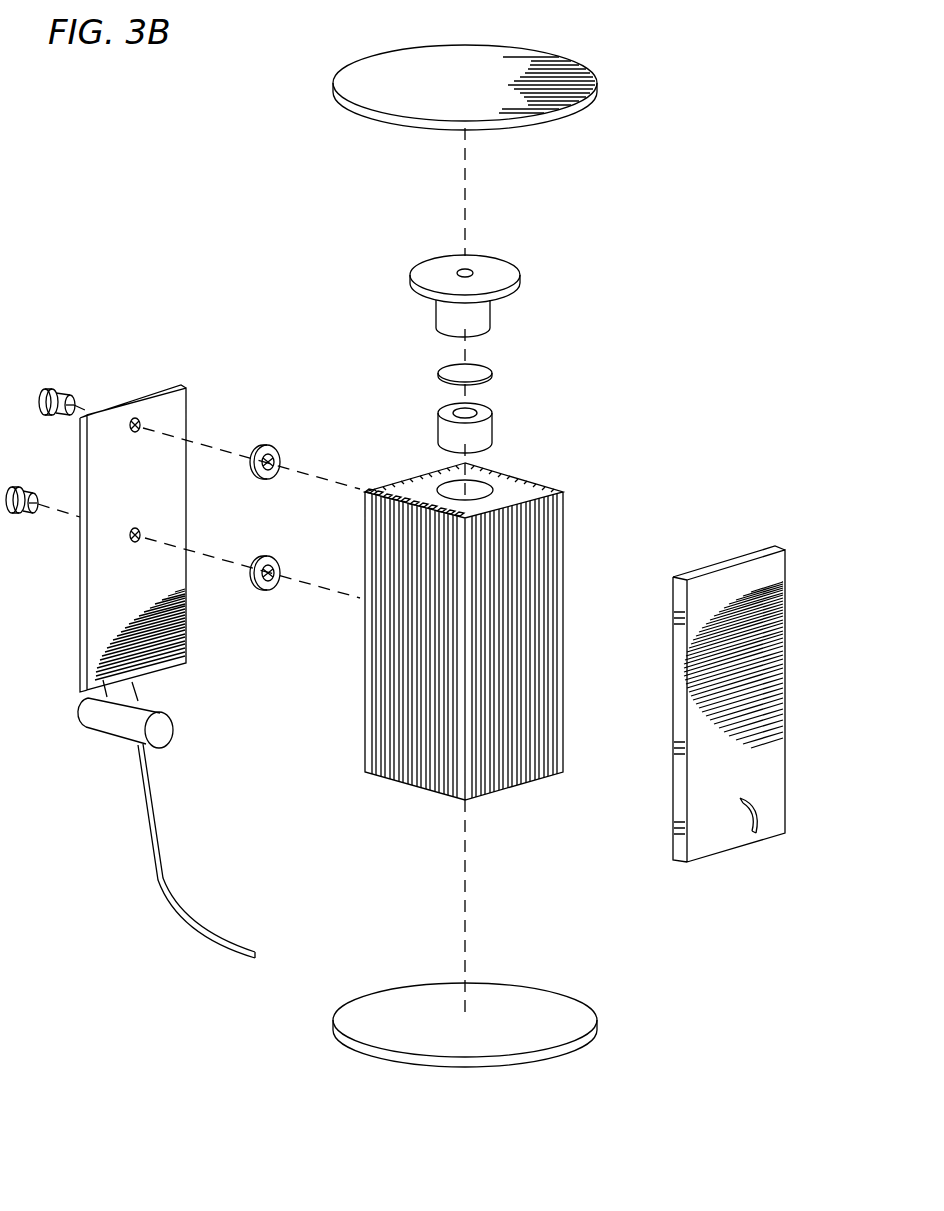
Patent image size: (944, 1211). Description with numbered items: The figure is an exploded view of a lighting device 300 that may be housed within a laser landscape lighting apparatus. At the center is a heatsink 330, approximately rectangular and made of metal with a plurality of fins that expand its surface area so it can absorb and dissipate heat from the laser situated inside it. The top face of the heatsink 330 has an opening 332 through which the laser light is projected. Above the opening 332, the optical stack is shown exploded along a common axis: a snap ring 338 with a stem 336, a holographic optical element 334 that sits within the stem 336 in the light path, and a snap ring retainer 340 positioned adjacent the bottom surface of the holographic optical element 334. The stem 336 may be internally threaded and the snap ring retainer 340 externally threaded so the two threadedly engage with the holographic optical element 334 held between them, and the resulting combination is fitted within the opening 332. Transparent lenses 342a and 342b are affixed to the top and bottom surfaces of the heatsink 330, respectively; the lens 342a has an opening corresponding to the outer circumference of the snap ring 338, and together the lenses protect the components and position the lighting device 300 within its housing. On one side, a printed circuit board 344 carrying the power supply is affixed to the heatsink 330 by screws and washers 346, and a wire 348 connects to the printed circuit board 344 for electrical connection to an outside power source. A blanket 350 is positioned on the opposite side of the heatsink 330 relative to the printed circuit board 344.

The lighting device 300 is at (724, 238).
The heatsink 330 is at (520, 490).
The opening 332 is at (440, 485).
The holographic optical element 334 is at (487, 375).
The stem 336 is at (492, 310).
The snap ring 338 is at (498, 270).
The snap ring retainer 340 is at (494, 425).
The lens 342a is at (372, 74).
The lens 342b is at (545, 1013).
The printed circuit board 344 is at (105, 553).
The screws and washers 346 is at (54, 390).
The wire 348 is at (145, 818).
The blanket 350 is at (732, 582).